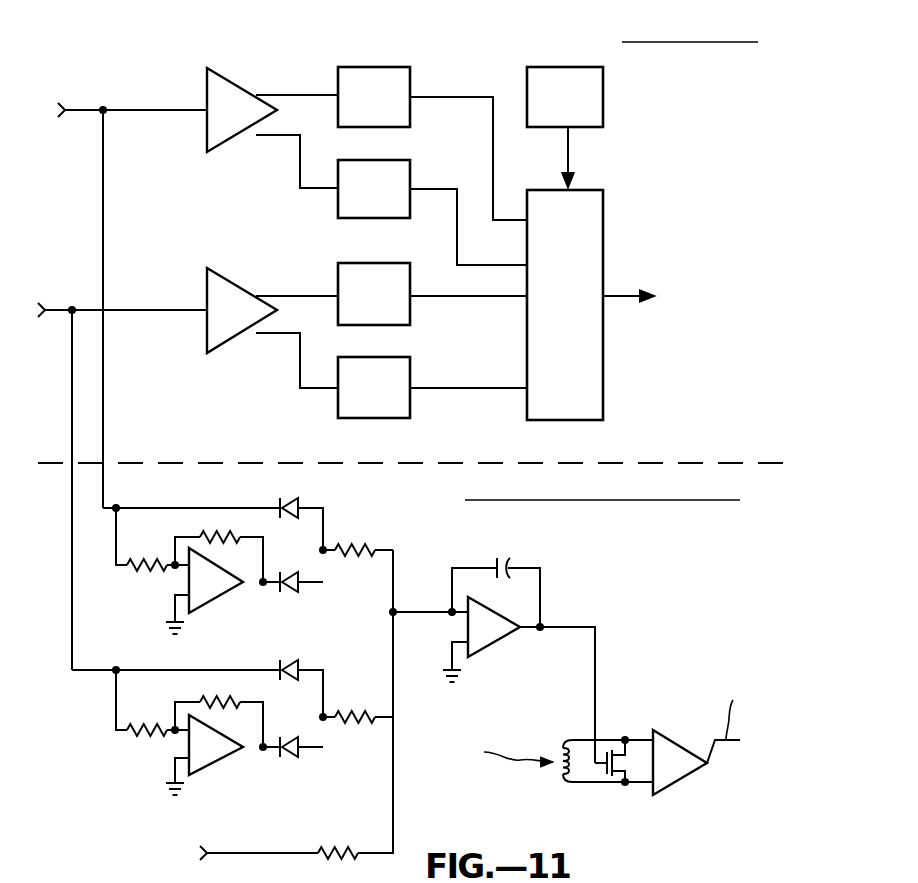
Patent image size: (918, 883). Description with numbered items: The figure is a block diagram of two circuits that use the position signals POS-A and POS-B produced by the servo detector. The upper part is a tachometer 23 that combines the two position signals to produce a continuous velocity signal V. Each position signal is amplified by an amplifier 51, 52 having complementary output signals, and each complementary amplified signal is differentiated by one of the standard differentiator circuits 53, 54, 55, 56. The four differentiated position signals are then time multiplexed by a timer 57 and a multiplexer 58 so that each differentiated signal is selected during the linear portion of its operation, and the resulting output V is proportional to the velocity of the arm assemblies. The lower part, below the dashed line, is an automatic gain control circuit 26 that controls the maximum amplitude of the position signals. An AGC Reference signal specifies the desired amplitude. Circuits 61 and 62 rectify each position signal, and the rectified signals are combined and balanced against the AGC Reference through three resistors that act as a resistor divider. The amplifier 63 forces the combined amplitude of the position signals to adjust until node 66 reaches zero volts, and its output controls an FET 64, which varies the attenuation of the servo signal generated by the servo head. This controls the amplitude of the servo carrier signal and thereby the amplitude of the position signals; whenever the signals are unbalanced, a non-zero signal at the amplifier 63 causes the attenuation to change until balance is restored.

The tachometer 23 is at (672, 100).
The automatic gain control circuit 26 is at (705, 567).
The amplifier 51 is at (228, 82).
The amplifier 52 is at (228, 282).
The differentiator circuit 53 is at (386, 67).
The differentiator circuit 54 is at (402, 160).
The differentiator circuit 55 is at (400, 263).
The differentiator circuit 56 is at (400, 357).
The timer 57 is at (603, 110).
The multiplexer 58 is at (603, 230).
The rectifier circuit 61 is at (342, 512).
The rectifier circuit 62 is at (308, 662).
The amplifier 63 is at (557, 592).
The FET 64 is at (628, 764).
The node 66 is at (384, 612).